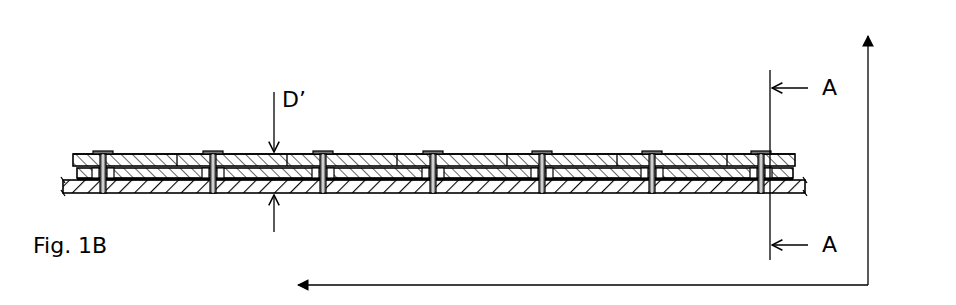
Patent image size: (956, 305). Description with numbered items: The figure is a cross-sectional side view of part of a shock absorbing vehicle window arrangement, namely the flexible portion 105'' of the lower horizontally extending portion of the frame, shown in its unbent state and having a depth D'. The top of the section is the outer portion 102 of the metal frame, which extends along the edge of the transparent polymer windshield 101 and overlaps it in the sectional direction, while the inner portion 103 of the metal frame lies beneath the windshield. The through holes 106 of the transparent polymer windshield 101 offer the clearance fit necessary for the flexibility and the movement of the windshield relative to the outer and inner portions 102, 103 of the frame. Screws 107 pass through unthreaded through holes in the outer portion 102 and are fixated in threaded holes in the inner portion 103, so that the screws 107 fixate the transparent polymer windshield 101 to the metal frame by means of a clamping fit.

The transparent polymer windshield 101 is at (575, 178).
The outer portion of the metal frame 102 is at (703, 155).
The inner portion of the metal frame 103 is at (700, 185).
The flexible portion 105'' is at (434, 99).
The through holes 106 is at (535, 170).
The screws 107 is at (320, 152).